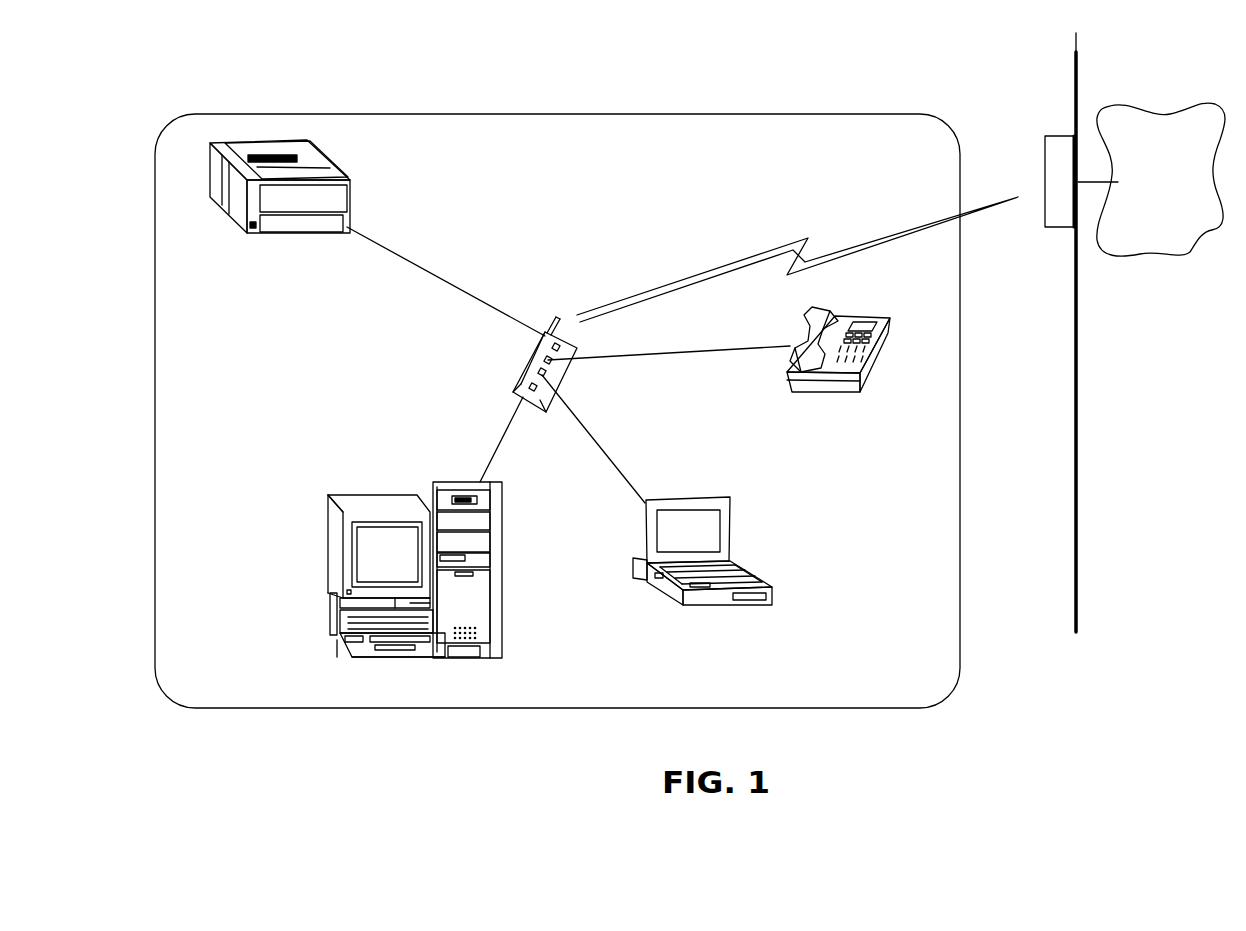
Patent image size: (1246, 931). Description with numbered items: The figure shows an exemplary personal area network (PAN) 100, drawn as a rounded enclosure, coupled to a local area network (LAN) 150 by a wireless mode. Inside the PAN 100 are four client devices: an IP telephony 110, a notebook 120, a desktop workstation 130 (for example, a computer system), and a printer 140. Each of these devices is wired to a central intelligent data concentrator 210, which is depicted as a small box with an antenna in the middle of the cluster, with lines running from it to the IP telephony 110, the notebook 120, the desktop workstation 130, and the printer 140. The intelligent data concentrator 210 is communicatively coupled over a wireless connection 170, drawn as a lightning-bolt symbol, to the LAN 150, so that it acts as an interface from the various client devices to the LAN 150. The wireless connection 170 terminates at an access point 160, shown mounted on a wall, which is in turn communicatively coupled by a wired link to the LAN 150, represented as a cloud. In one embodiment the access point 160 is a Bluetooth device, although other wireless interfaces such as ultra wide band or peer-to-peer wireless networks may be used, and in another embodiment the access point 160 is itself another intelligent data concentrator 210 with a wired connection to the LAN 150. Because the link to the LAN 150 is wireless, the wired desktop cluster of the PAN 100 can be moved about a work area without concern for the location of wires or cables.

The personal area network (PAN) 100 is at (537, 95).
The IP telephony 110 is at (803, 478).
The notebook 120 is at (743, 668).
The desktop workstation 130 is at (235, 668).
The printer 140 is at (283, 290).
The local area network (LAN) 150 is at (1137, 223).
The access point 160 is at (1036, 148).
The wireless connection 170 is at (929, 240).
The intelligent data concentrator 210 is at (567, 441).